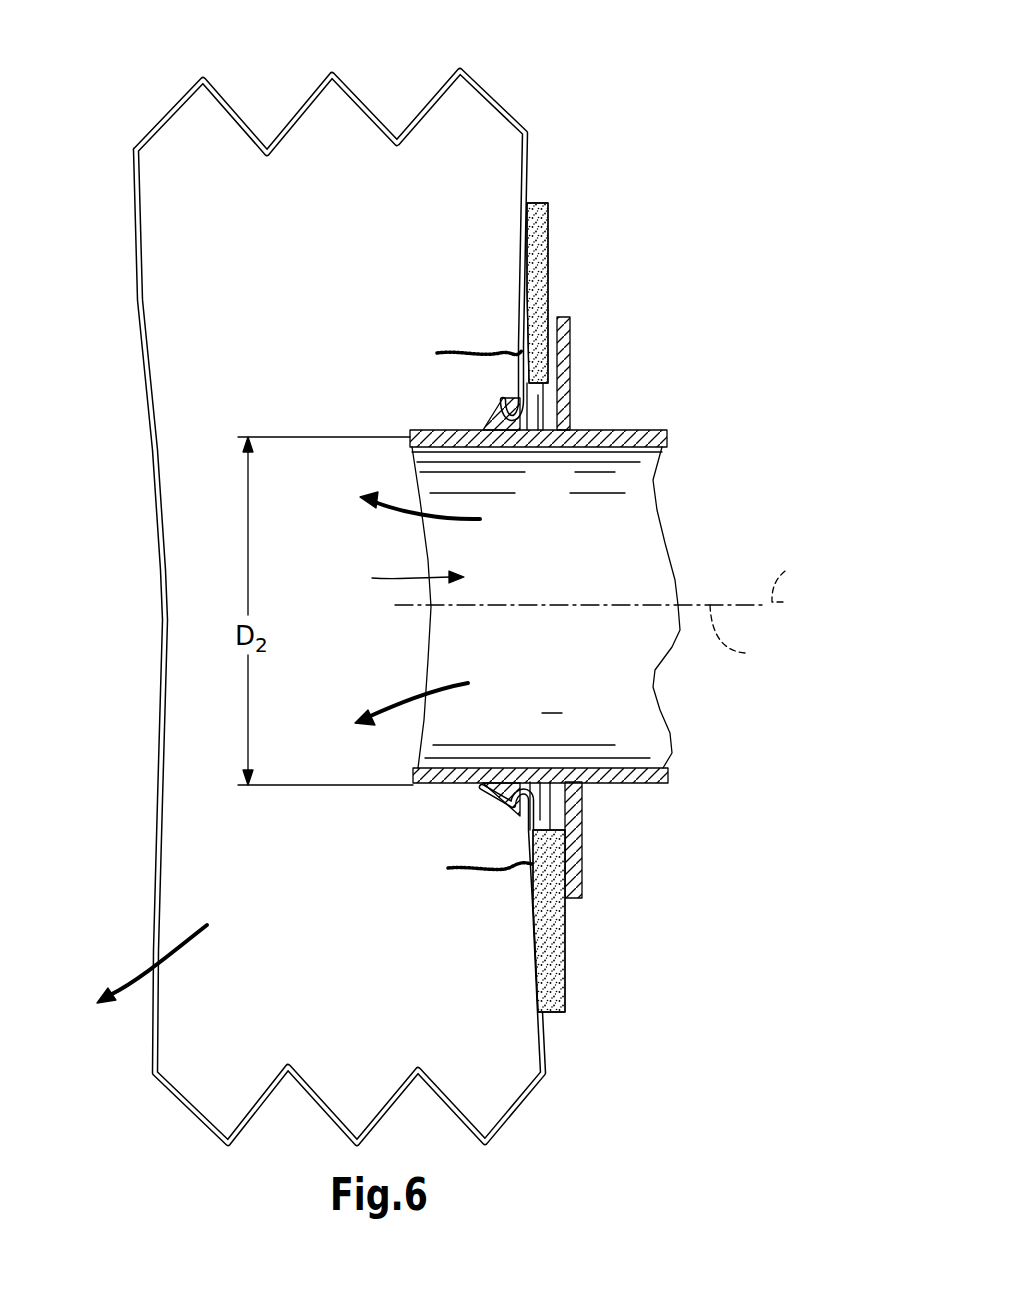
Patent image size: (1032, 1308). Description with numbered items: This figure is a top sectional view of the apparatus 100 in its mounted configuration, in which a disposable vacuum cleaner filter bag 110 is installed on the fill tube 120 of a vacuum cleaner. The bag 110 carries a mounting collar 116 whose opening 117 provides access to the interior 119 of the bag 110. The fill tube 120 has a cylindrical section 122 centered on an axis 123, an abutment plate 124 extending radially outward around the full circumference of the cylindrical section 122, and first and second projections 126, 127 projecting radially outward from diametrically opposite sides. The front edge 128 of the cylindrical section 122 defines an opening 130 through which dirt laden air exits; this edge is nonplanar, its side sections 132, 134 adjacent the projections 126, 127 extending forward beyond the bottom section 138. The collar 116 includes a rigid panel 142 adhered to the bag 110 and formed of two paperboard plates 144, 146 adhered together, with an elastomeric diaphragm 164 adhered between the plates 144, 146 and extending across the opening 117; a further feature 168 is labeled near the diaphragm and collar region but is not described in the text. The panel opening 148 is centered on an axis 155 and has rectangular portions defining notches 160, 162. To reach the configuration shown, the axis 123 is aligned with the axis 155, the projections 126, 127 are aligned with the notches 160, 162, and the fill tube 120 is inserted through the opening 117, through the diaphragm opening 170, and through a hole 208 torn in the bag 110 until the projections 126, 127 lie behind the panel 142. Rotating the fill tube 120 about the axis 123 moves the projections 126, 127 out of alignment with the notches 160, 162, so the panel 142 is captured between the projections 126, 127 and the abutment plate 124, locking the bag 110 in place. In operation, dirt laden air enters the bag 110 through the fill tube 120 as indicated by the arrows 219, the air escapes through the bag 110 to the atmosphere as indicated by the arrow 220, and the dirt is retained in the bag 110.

The apparatus 100 is at (612, 48).
The filter bag 110 is at (133, 275).
The mounting collar 116 is at (596, 176).
The opening 117 is at (625, 514).
The interior 119 is at (200, 765).
The fill tube 120 is at (760, 421).
The cylindrical section 122 is at (410, 432).
The axis 123 is at (788, 569).
The abutment plate 124 is at (568, 332).
The first projection 126 is at (500, 415).
The second projection 127 is at (493, 800).
The front edge 128 is at (430, 563).
The opening 130 is at (394, 576).
The side section 132 is at (410, 446).
The side section 134 is at (413, 772).
The bottom section 138 is at (413, 620).
The rigid panel 142 is at (576, 992).
The paperboard plate 144 is at (542, 961).
The paperboard plate 146 is at (566, 962).
The panel opening 148 is at (572, 400).
The axis 155 is at (745, 653).
The notch 160 is at (562, 415).
The notch 162 is at (576, 808).
The elastomeric diaphragm 164 is at (486, 425).
The wall hook 168 is at (502, 400).
The diaphragm opening 170 is at (624, 541).
The hole 208 is at (645, 578).
The arrows 219 is at (457, 522).
The arrow 220 is at (130, 980).